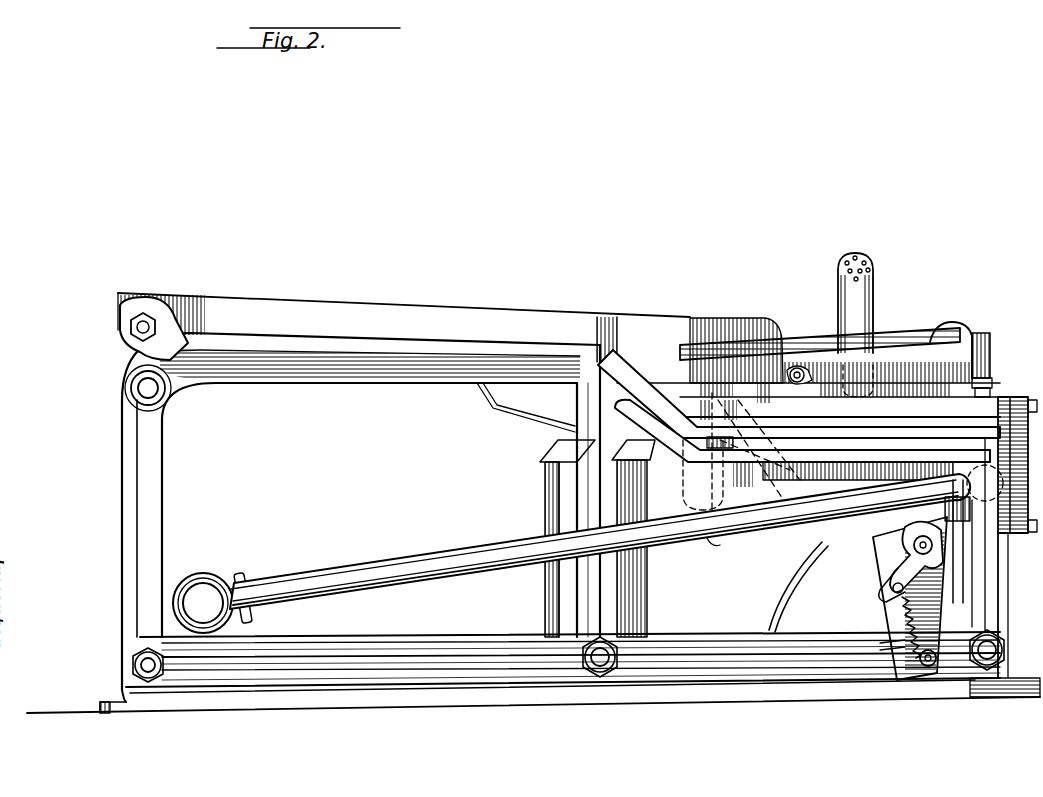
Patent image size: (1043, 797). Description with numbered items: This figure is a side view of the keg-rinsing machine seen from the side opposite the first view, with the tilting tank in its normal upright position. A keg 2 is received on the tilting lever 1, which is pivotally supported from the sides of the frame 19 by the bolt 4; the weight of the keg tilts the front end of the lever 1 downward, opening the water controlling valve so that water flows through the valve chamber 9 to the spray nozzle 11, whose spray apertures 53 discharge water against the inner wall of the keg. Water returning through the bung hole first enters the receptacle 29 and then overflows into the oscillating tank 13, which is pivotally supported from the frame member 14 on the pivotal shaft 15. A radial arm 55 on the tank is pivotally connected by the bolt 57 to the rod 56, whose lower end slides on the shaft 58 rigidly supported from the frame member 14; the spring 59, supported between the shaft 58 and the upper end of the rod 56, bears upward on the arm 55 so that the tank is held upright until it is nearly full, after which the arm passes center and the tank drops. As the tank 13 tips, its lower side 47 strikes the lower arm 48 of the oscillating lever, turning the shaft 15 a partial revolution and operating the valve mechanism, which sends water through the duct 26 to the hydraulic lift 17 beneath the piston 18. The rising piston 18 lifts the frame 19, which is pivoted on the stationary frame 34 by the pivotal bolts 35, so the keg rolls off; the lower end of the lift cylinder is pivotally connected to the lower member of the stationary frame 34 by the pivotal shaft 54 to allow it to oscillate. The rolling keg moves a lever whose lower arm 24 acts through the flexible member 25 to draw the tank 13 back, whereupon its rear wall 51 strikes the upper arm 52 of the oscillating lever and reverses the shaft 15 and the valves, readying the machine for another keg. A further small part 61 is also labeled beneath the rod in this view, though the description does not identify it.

The tilting lever 1 is at (985, 345).
The keg 2 is at (994, 382).
The bolt 4 is at (790, 377).
The valve chamber 9 is at (748, 530).
The spray nozzle 11 is at (881, 314).
The oscillating tank 13 is at (790, 470).
The frame member 14 is at (960, 606).
The pivotal shaft 15 is at (934, 546).
The hydraulic lift 17 is at (647, 582).
The piston 18 is at (575, 597).
The frame 19 is at (361, 366).
The lower arm 24 is at (514, 413).
The flexible member 25 is at (688, 510).
The duct 26 is at (806, 583).
The receptacle 29 is at (926, 395).
The stationary frame 34 is at (158, 454).
The pivotal bolts 35 is at (143, 332).
The lower side 47 is at (884, 547).
The lower arm of oscillating lever 48 is at (885, 580).
The rear wall 51 is at (928, 460).
The upper arm 52 is at (950, 517).
The spray apertures 53 is at (868, 258).
The pivotal shaft 54 is at (600, 662).
The radial arm 55 is at (952, 569).
The rod 56 is at (900, 606).
The bolt 57 is at (896, 593).
The shaft 58 is at (922, 666).
The spring 59 is at (880, 646).
The clip 61 is at (716, 542).